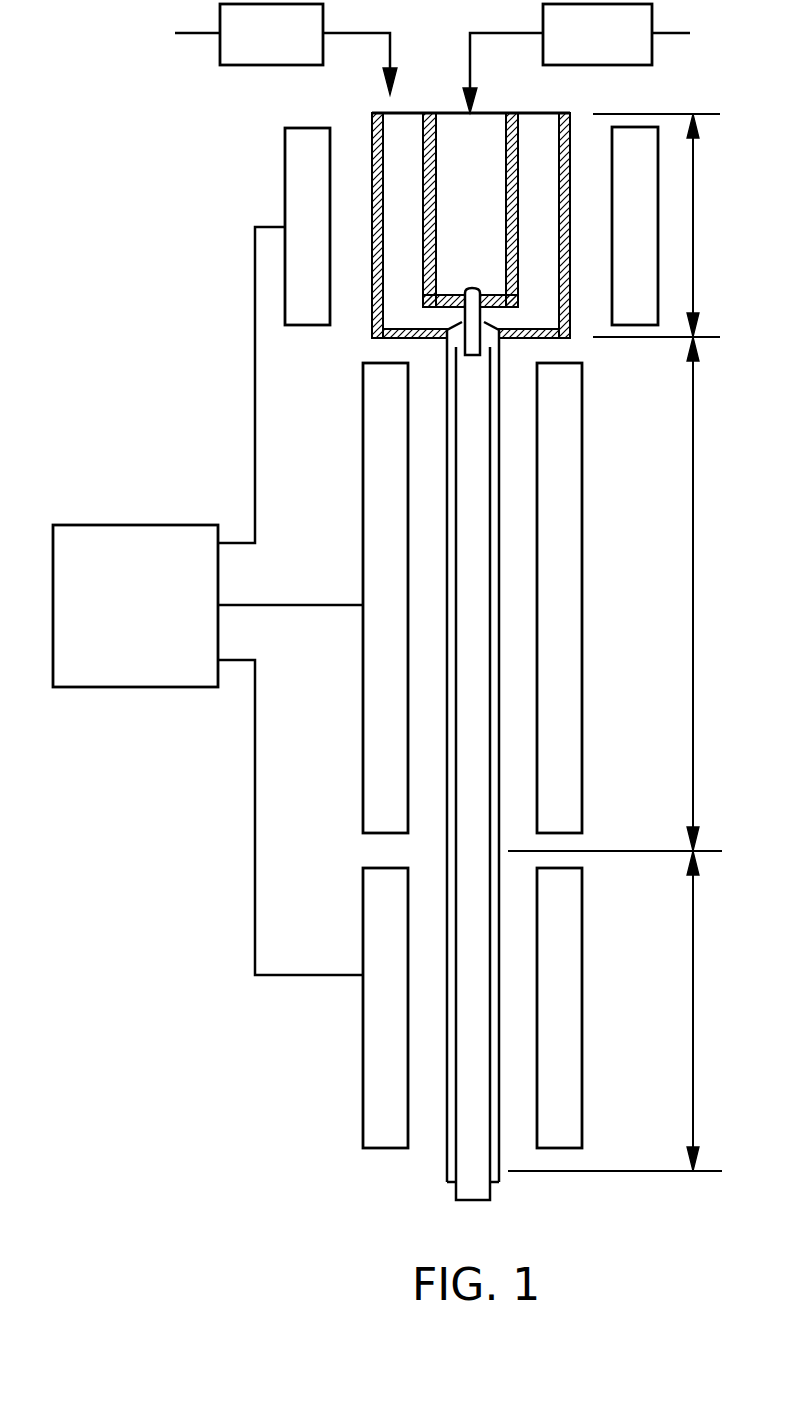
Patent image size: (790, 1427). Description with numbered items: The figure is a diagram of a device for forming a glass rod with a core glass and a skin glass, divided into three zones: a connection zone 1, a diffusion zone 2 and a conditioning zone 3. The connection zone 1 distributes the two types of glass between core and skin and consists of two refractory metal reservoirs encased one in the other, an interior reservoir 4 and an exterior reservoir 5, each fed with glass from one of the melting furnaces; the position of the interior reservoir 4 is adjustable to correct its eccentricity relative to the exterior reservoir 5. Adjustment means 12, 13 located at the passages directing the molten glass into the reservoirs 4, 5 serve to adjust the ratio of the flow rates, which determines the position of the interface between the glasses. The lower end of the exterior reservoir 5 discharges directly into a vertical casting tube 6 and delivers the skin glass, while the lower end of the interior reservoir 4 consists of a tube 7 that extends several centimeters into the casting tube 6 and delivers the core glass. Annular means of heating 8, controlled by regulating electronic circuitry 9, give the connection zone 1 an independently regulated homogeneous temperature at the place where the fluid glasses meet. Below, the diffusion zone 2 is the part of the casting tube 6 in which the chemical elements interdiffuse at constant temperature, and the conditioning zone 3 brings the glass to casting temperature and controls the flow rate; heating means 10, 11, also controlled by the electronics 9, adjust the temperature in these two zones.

The connection zone 1 is at (657, 225).
The diffusion zone 2 is at (616, 594).
The conditioning zone 3 is at (617, 1011).
The interior reservoir 4 is at (456, 232).
The exterior reservoir 5 is at (538, 128).
The casting tube 6 is at (468, 444).
The tube 7 is at (470, 344).
The annular means of heating 8 is at (305, 175).
The regulating electronic circuitry 9 is at (88, 540).
The heating means 10 is at (378, 525).
The heating means 11 is at (380, 1036).
The adjustment means 12 is at (622, 54).
The adjustment means 13 is at (296, 54).